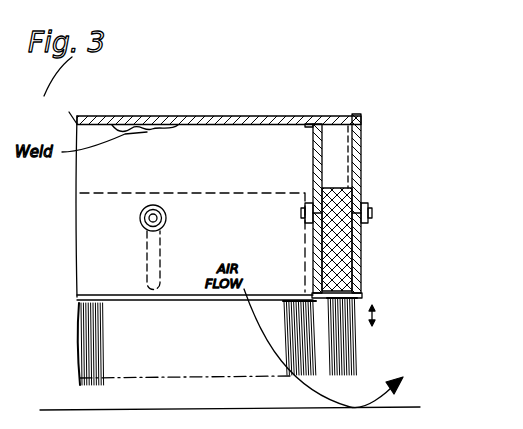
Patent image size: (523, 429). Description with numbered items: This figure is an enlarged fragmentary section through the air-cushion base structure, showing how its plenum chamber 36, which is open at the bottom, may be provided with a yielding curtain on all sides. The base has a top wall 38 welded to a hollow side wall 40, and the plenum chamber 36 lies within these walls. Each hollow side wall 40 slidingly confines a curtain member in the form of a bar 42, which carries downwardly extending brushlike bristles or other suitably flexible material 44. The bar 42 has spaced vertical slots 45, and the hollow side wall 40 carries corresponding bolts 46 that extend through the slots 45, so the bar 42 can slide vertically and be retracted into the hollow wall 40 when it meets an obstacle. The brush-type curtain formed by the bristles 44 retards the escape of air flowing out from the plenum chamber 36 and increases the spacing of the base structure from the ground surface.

The plenum chamber 36 is at (235, 156).
The top wall 38 is at (168, 117).
The side wall 40 is at (122, 253).
The bar 42 is at (340, 250).
The bristles 44 is at (350, 352).
The vertical slot 45 is at (162, 250).
The bolt 46 is at (166, 217).